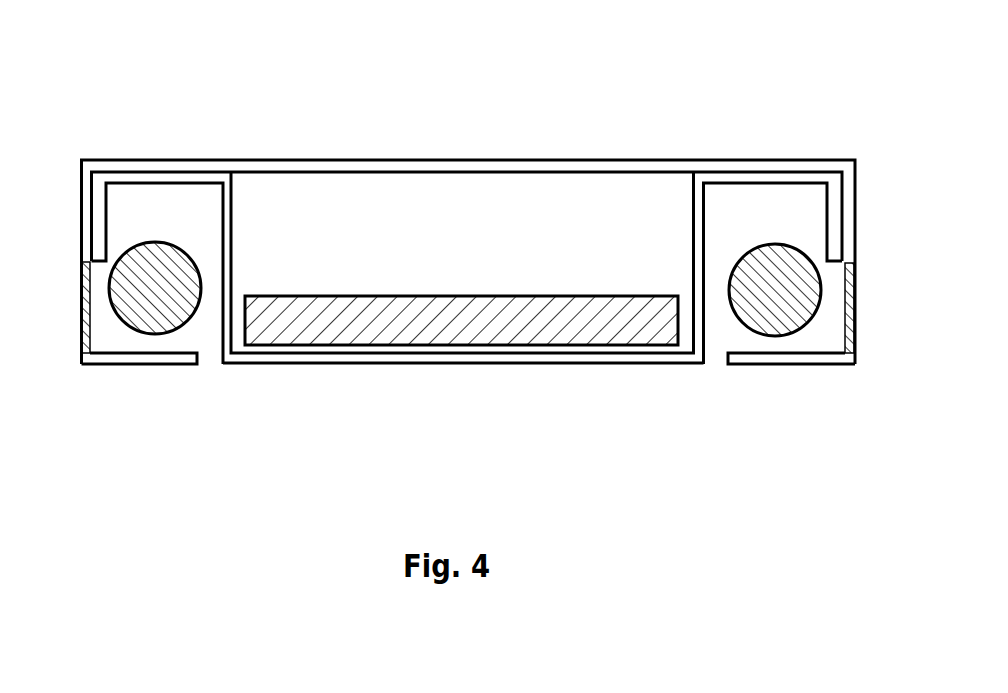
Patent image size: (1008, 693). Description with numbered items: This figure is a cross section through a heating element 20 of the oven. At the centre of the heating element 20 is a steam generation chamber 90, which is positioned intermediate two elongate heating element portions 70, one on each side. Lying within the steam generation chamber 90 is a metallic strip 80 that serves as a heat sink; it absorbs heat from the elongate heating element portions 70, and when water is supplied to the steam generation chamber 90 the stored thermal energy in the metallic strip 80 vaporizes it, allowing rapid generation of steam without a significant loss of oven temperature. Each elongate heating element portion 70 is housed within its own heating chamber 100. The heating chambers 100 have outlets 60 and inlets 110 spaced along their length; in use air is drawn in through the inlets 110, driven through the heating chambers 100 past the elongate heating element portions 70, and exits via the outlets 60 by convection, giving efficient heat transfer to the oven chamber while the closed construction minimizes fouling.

The heating element 20 is at (500, 133).
The outlets 60 is at (80, 313).
The elongate heating element portions 70 is at (143, 310).
The metallic strip 80 is at (391, 320).
The steam generation chamber 90 is at (487, 245).
The heating chambers 100 is at (186, 230).
The inlets 110 is at (207, 367).